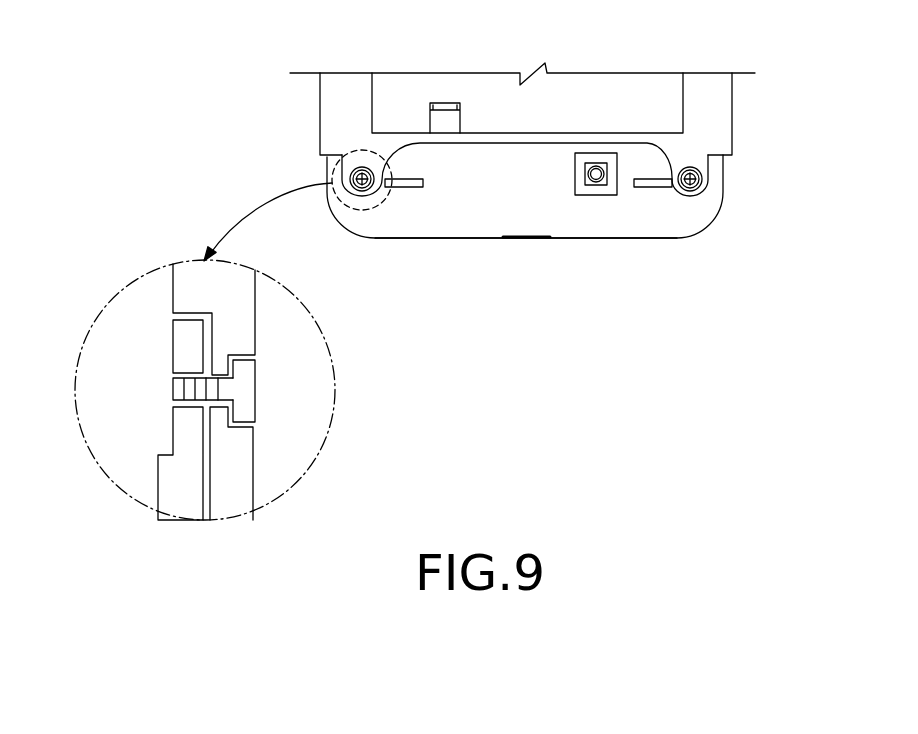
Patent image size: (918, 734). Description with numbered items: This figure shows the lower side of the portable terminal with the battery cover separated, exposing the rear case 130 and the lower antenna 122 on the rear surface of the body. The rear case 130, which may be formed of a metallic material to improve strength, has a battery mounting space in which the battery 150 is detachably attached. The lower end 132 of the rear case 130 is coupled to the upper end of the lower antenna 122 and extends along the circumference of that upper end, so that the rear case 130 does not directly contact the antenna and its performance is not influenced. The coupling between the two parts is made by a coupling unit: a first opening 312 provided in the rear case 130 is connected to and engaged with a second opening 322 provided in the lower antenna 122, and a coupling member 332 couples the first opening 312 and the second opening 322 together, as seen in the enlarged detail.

The battery 150 is at (605, 95).
The lower end of the rear case 132 is at (670, 152).
The rear case 130 is at (722, 142).
The lower antenna 122 is at (632, 225).
The coupling member 332 is at (257, 390).
The first opening 312 is at (218, 410).
The second opening 322 is at (188, 410).